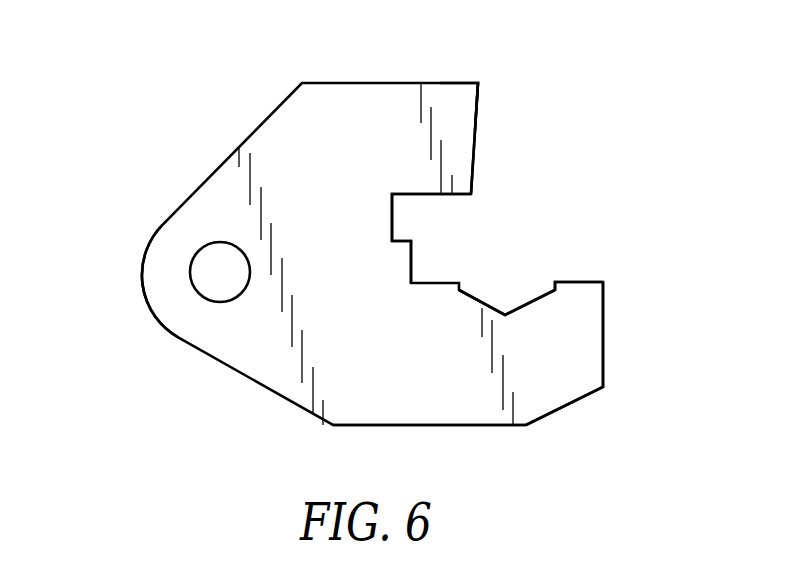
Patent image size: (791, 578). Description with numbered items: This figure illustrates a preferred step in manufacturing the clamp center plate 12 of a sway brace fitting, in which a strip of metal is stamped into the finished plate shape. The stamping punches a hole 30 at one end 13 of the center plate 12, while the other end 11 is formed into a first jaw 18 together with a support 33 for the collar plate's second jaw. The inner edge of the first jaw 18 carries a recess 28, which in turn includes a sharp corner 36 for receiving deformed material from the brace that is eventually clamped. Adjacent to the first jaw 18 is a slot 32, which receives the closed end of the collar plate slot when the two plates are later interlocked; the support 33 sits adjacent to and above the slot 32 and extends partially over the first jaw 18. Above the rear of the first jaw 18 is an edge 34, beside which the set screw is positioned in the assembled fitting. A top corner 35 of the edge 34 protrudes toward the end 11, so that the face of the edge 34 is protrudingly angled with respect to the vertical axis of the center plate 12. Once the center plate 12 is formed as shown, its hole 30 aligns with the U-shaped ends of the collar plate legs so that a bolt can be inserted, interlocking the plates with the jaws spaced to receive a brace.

The end 11 is at (583, 337).
The clamp center plate 12 is at (258, 125).
The end 13 is at (162, 250).
The first jaw 18 is at (463, 374).
The recess 28 is at (502, 308).
The hole 30 is at (220, 290).
The slot 32 is at (393, 212).
The support 33 is at (415, 140).
The edge 34 is at (480, 117).
The top corner 35 is at (480, 83).
The sharp corner 36 is at (553, 282).